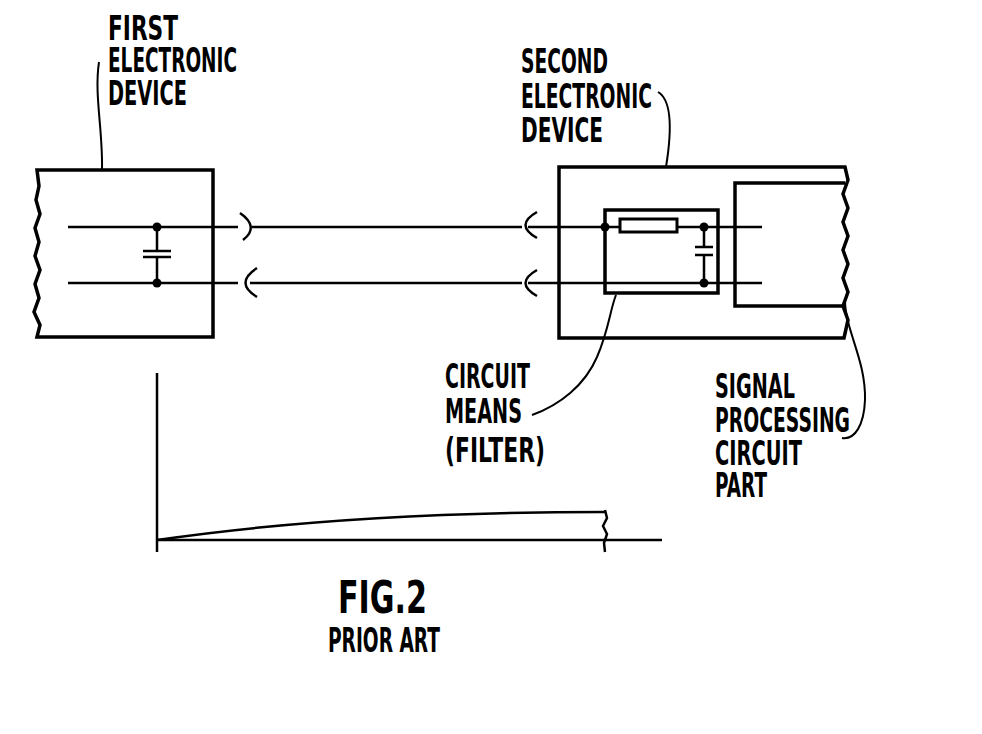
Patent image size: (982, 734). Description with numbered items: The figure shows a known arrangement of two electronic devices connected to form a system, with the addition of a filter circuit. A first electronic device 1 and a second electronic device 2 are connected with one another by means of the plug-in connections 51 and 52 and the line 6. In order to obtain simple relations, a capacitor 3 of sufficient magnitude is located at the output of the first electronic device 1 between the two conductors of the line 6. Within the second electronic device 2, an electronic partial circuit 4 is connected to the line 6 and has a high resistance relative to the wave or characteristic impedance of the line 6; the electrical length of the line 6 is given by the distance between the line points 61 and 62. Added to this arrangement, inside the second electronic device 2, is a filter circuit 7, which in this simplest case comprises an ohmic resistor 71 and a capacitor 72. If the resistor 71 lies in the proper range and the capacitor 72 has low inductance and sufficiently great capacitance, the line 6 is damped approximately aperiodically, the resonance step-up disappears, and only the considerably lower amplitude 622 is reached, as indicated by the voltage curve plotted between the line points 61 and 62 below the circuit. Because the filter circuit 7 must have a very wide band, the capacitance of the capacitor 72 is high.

The first electronic device 1 is at (135, 170).
The second electronic device 2 is at (705, 166).
The capacitor 3 is at (143, 254).
The electronic partial circuit 4 is at (822, 278).
The line 6 is at (335, 227).
The filter circuit 7 is at (663, 295).
The plug-in connection 51 is at (244, 240).
The plug-in connection 52 is at (524, 270).
The line point 61 is at (157, 288).
The line point 62 is at (605, 229).
The ohmic resistor 71 is at (651, 234).
The capacitor 72 is at (699, 251).
The amplitude 622 is at (612, 525).